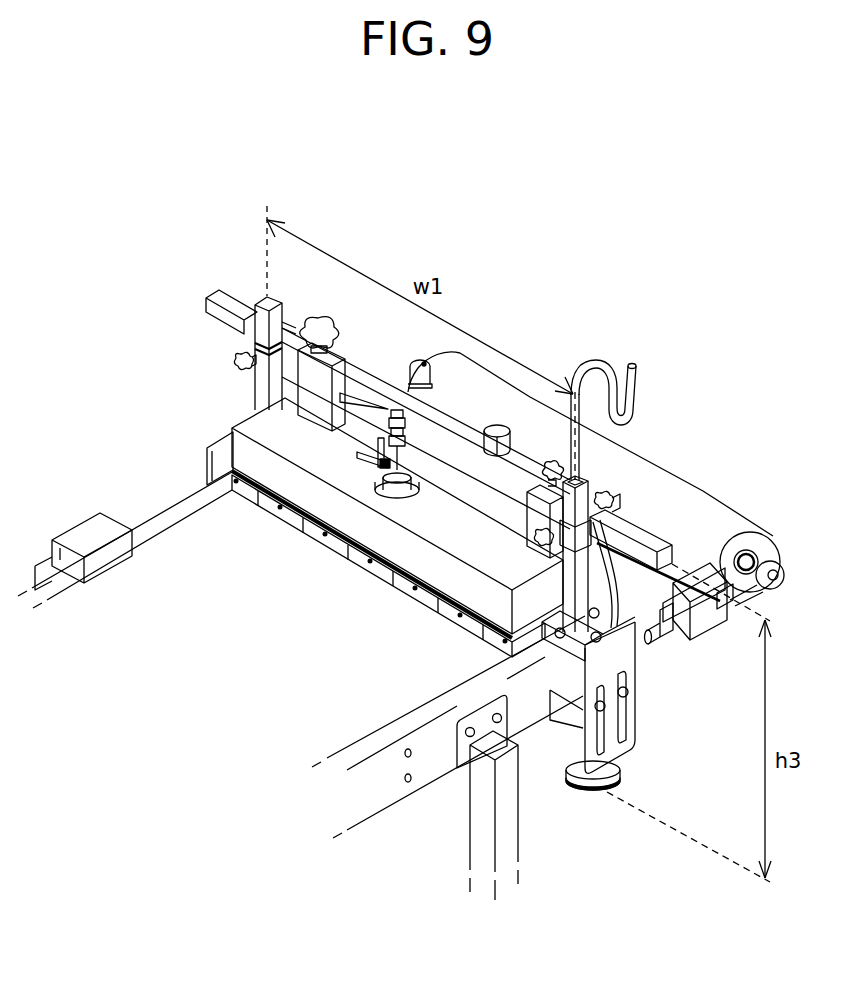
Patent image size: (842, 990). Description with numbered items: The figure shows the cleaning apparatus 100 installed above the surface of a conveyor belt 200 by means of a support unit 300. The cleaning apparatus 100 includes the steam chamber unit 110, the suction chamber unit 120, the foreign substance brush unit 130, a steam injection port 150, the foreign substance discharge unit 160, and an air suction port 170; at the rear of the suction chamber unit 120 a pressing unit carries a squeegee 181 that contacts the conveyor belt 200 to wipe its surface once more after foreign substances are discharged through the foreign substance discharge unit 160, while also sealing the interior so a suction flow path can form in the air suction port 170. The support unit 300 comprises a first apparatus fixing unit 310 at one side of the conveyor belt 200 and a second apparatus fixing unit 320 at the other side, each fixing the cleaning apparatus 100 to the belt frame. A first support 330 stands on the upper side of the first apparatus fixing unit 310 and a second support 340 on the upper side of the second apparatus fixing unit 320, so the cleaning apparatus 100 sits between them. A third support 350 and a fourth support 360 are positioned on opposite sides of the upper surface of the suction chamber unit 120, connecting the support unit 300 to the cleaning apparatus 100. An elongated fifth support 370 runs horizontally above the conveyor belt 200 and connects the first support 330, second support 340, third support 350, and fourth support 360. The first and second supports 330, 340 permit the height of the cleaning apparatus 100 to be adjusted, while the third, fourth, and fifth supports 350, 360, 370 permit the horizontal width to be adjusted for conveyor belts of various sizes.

The cleaning apparatus 100 is at (346, 527).
The steam chamber unit 110 is at (318, 490).
The suction chamber unit 120 is at (596, 487).
The foreign substance brush unit 130 is at (348, 555).
The steam injection port 150 is at (380, 478).
The foreign substance discharge unit 160 is at (497, 431).
The air suction port 170 is at (612, 626).
The squeegee 181 is at (663, 627).
The conveyor belt 200 is at (168, 540).
The support unit 300 is at (205, 299).
The first apparatus fixing unit 310 is at (633, 718).
The second apparatus fixing unit 320 is at (228, 447).
The first support 330 is at (586, 490).
The second support 340 is at (255, 322).
The third support 350 is at (315, 402).
The fourth support 360 is at (537, 518).
The fifth support 370 is at (668, 562).